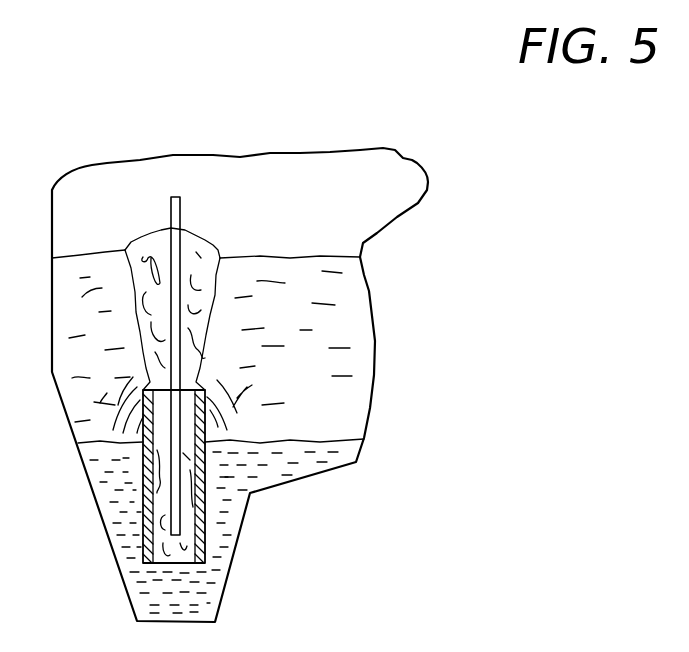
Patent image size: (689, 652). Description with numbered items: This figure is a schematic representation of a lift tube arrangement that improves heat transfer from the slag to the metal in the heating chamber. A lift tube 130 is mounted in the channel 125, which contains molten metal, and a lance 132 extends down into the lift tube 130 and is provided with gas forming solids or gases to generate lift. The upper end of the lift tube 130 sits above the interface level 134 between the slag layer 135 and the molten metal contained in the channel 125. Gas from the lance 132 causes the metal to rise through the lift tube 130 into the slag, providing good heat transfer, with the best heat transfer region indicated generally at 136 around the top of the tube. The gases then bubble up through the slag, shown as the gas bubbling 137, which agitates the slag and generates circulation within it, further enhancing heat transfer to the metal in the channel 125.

The channel 125 is at (200, 587).
The lift tube 130 is at (205, 532).
The lance 132 is at (180, 208).
The interface level 134 is at (275, 440).
The slag layer 135 is at (297, 273).
The heat transfer region 136 is at (227, 416).
The gas bubbling 137 is at (222, 310).